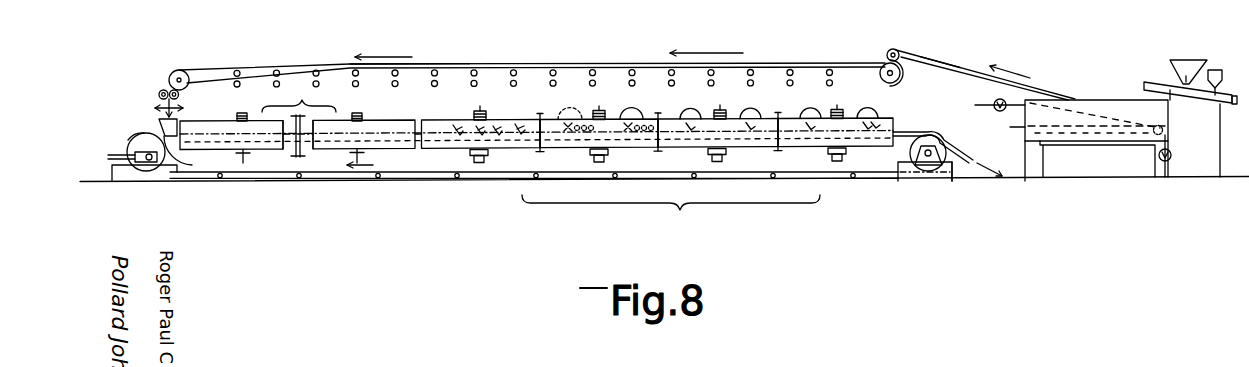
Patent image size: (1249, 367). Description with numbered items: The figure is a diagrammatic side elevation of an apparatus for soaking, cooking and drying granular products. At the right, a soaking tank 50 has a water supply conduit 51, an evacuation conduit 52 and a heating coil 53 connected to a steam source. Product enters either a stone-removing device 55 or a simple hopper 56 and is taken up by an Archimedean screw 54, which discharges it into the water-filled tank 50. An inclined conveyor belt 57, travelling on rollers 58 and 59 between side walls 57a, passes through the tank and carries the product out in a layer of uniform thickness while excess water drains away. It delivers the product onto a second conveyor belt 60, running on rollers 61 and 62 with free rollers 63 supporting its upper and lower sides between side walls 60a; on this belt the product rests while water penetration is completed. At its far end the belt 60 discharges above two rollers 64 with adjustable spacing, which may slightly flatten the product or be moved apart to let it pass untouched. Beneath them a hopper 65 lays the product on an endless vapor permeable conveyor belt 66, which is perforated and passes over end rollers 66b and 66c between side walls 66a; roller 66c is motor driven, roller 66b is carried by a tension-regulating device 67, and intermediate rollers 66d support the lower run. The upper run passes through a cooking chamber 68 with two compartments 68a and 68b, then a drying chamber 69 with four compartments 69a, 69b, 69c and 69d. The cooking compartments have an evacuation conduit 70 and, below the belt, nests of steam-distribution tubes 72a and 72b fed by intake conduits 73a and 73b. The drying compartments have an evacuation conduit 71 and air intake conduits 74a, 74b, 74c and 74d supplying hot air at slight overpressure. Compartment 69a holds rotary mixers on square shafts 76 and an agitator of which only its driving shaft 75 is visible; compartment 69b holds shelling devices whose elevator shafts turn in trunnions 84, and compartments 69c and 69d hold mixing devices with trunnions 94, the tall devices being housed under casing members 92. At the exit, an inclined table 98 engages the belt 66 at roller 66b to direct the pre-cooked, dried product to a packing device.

The soaking tank 50 is at (1115, 104).
The water supply conduit 51 is at (986, 106).
The evacuation conduit 52 is at (1171, 158).
The heating coil 53 is at (1060, 142).
The Archimedean screw 54 is at (1150, 81).
The stone-removing device 55 is at (1223, 72).
The hopper 56 is at (1182, 68).
The inclined conveyor belt 57 is at (960, 72).
The side walls 57a is at (946, 63).
The roller 58 is at (1164, 130).
The roller 59 is at (897, 51).
The second conveyor belt 60 is at (585, 71).
The side walls 60a is at (468, 63).
The roller 61 is at (899, 79).
The roller 62 is at (178, 70).
The free rollers 63 is at (278, 82).
The rollers 64 is at (160, 92).
The hopper 65 is at (159, 123).
The endless vapor permeable conveyor belt 66 is at (189, 160).
The side walls 66a is at (130, 138).
The end roller 66b is at (126, 152).
The end roller 66c is at (949, 165).
The intermediate rollers 66d is at (380, 179).
The tension regulating device 67 is at (152, 162).
The cooking chamber 68 is at (299, 99).
The cooking compartment 68a is at (202, 127).
The cooking compartment 68b is at (395, 128).
The drying chamber 69 is at (671, 217).
The drying compartment 69a is at (450, 143).
The drying compartment 69b is at (570, 143).
The drying compartment 69c is at (687, 140).
The drying compartment 69d is at (802, 138).
The evacuation conduit 70 is at (244, 113).
The evacuation conduit 71 is at (477, 111).
The steam-distribution tubes 72a is at (291, 146).
The steam-distribution tubes 72b is at (302, 154).
The intake conduit 73a is at (247, 157).
The intake conduit 73b is at (363, 158).
The air intake conduit 74a is at (487, 157).
The air intake conduit 74b is at (607, 156).
The air intake conduit 74c is at (725, 156).
The air intake conduit 74d is at (845, 155).
The driving shaft 75 is at (520, 127).
The square shaft 76 is at (456, 128).
The trunnions 84 is at (573, 121).
The casing members 92 is at (568, 118).
The trunnions 94 is at (692, 118).
The inclined table 98 is at (958, 150).